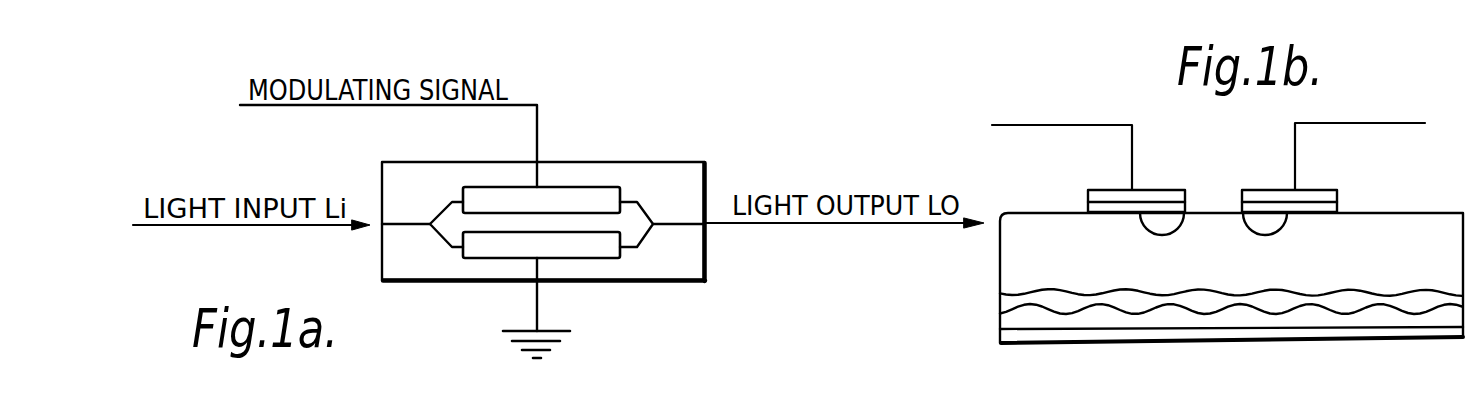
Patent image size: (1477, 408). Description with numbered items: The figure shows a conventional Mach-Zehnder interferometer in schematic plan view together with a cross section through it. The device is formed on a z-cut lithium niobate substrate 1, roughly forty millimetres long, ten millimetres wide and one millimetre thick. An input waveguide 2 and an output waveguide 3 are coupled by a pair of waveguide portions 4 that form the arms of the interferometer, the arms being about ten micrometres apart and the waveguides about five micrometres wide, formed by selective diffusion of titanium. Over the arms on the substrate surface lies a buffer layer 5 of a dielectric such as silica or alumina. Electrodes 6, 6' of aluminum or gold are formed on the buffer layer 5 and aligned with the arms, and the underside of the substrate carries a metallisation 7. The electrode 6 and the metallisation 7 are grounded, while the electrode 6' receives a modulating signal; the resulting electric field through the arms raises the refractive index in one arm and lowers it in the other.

In FIG. 1A, the z-cut lithium niobate substrate 1 is at (699, 166).
In FIG. 1A, the input waveguide 2 is at (403, 226).
In FIG. 1A, the output waveguide 3 is at (700, 225).
In FIG. 1A, the waveguide portions 4 is at (645, 218).
In FIG. 1B, the buffer layer 5 is at (1340, 207).
In FIG. 1B, the electrode 6 is at (1136, 168).
In FIG. 1A, the electrode 6' is at (580, 133).
In FIG. 1B, the electrode 6' is at (1289, 168).
In FIG. 1B, the metallisation 7 is at (1262, 332).